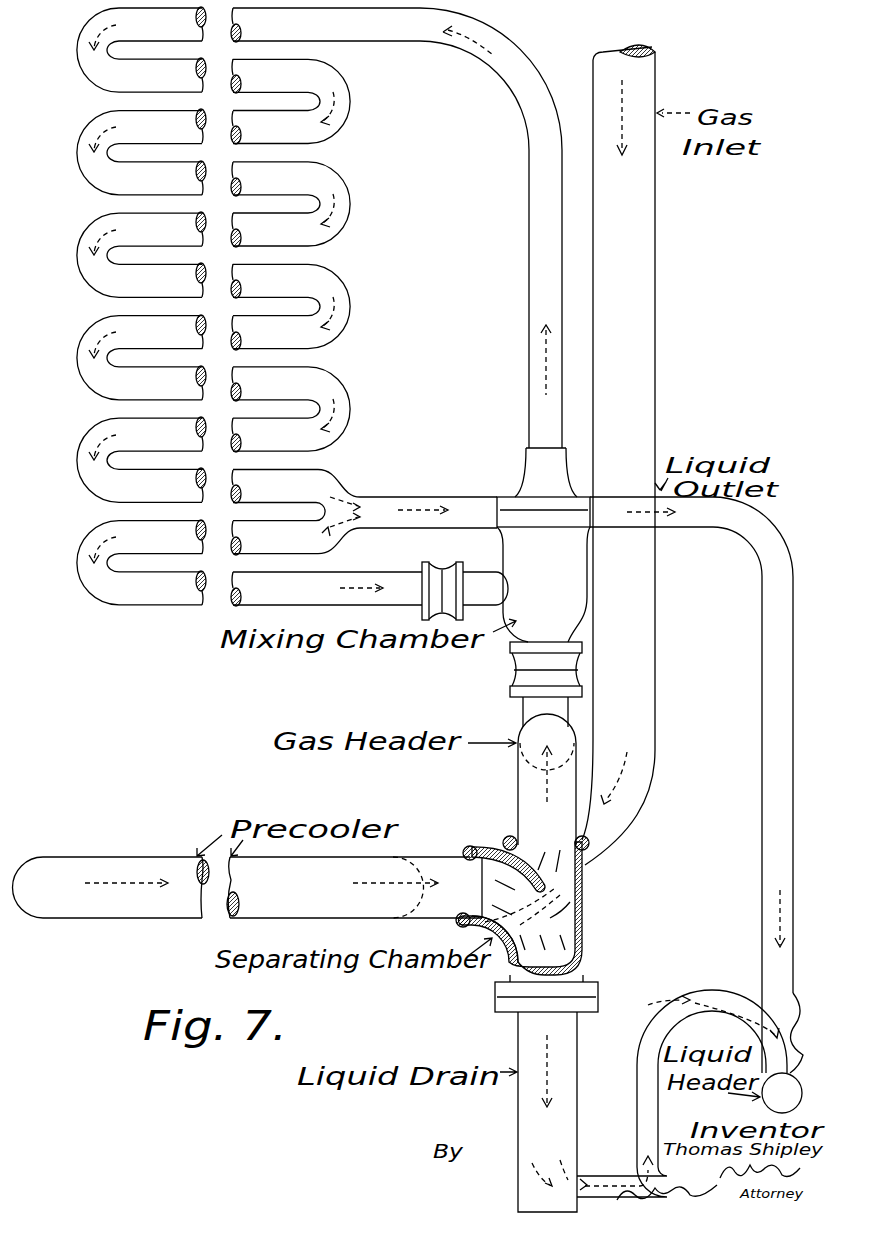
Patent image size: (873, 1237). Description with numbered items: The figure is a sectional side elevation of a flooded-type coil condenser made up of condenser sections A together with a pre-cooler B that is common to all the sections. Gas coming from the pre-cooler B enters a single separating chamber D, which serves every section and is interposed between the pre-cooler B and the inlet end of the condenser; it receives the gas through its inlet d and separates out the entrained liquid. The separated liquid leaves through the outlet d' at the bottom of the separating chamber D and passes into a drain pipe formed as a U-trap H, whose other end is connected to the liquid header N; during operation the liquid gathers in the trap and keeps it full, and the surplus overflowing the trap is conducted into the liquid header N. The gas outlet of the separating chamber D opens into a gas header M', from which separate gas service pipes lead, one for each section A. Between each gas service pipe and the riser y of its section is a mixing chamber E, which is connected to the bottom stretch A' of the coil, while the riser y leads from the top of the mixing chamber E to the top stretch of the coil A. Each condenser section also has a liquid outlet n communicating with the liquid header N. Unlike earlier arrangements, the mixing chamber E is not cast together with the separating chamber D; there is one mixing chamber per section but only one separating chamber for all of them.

The condenser section A is at (262, 306).
The bottom stretch of the coil A' is at (370, 579).
The pre-cooler B is at (93, 863).
The separating chamber D is at (585, 900).
The mixing chamber E is at (543, 545).
The U-trap H is at (716, 993).
The gas header M' is at (522, 743).
The liquid header N is at (803, 980).
The inlet d is at (475, 890).
The outlet d' is at (548, 939).
The liquid outlet n is at (406, 497).
The riser y is at (542, 246).